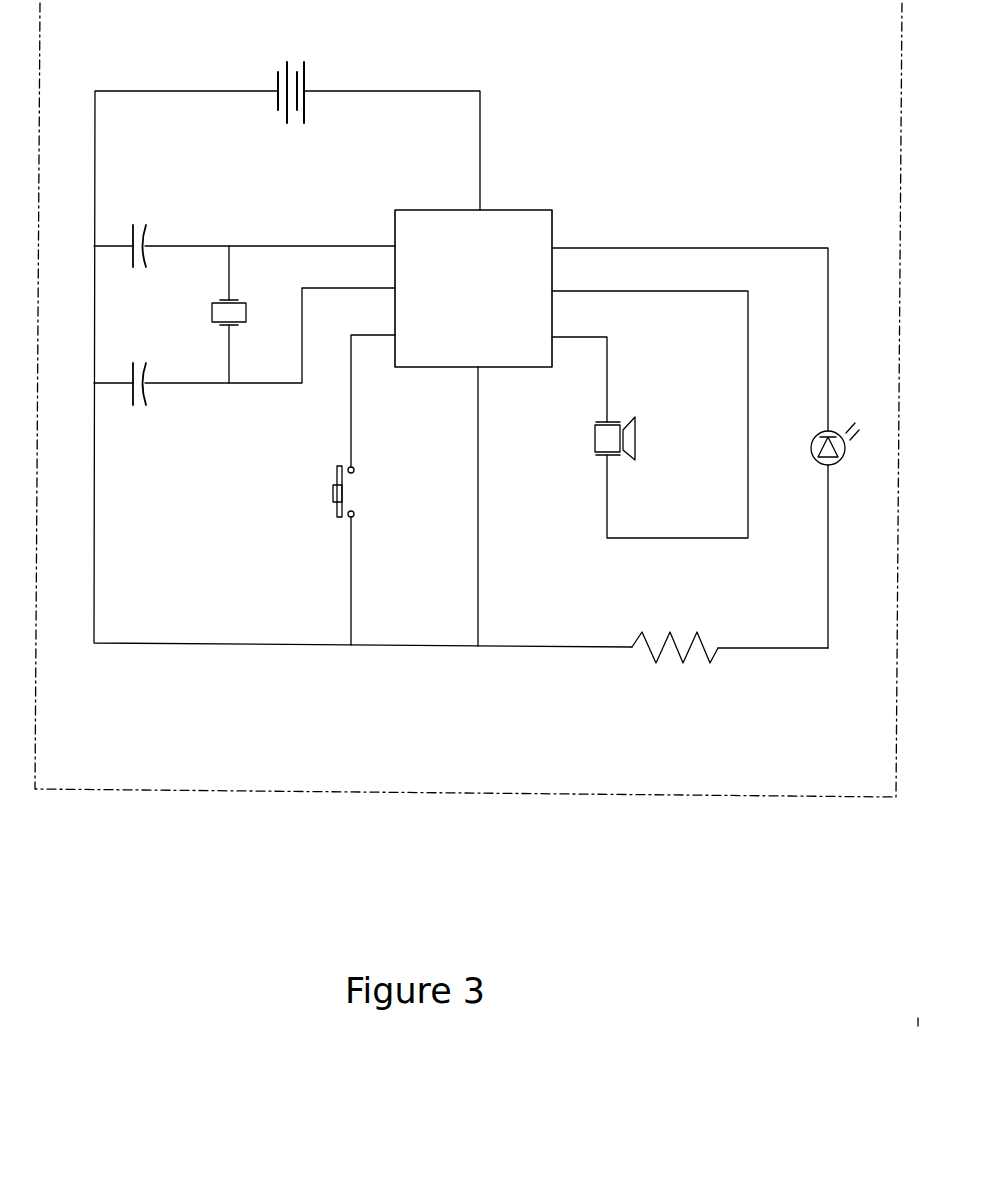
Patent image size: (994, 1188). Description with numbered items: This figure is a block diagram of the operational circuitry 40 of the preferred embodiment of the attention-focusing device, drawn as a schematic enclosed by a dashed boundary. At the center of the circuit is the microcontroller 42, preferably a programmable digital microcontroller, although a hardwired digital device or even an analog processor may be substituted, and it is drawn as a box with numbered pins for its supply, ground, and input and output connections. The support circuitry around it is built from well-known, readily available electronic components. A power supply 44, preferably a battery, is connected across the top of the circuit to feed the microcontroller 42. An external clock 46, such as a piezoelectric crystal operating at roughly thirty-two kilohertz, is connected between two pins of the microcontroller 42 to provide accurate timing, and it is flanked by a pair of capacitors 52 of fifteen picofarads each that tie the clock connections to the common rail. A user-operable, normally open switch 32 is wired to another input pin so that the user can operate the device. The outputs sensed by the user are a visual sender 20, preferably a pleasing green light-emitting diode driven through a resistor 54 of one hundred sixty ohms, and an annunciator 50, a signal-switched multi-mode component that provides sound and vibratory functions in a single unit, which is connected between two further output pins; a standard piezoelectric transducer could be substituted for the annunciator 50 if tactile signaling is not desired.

The visual sender 20 is at (845, 465).
The user-operable normally open switch 32 is at (330, 511).
The operational circuitry 40 is at (110, 792).
The microcontroller 42 is at (523, 207).
The power supply 44 is at (272, 73).
The external clock 46 is at (209, 326).
The annunciator 50 is at (590, 440).
The capacitors 52 is at (152, 233).
The resistor 54 is at (644, 655).